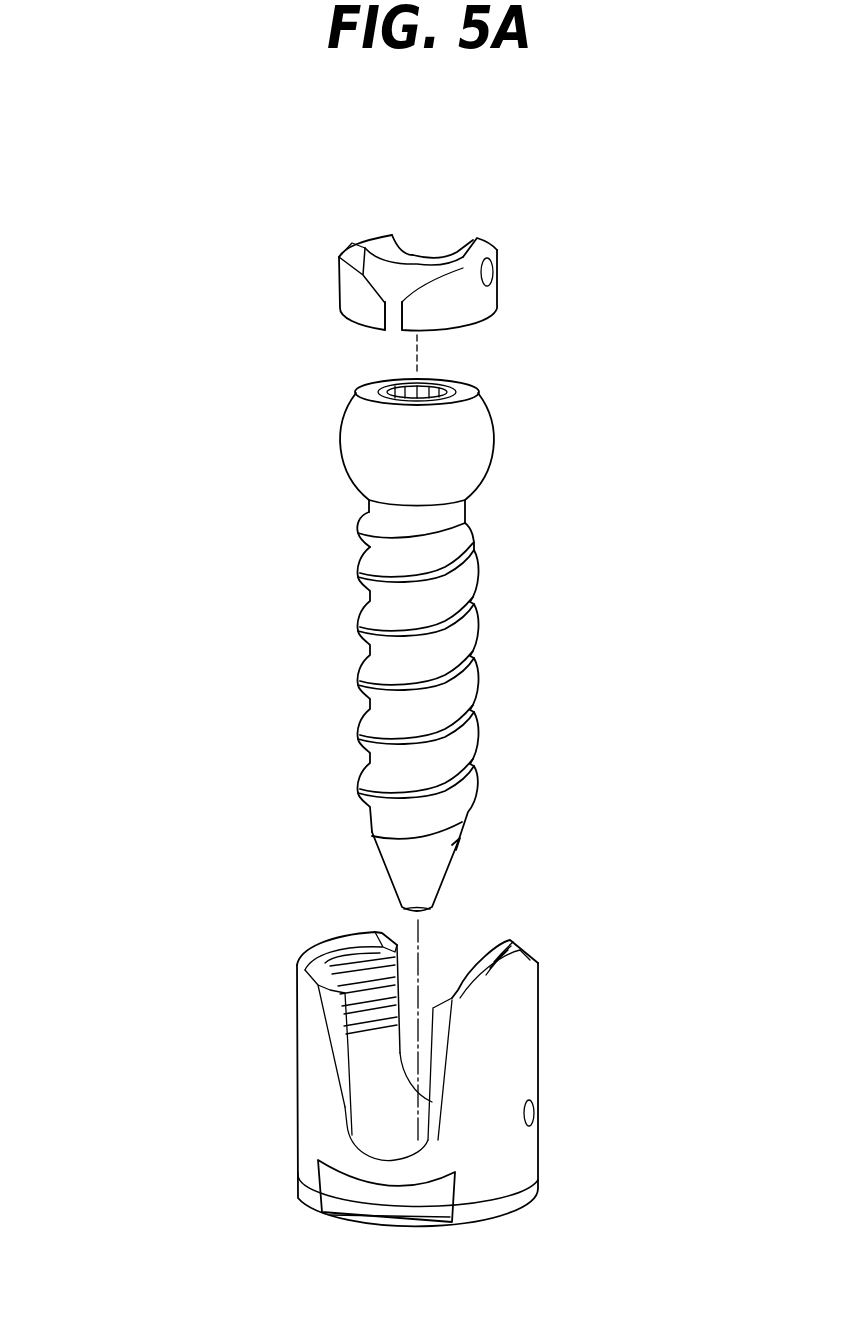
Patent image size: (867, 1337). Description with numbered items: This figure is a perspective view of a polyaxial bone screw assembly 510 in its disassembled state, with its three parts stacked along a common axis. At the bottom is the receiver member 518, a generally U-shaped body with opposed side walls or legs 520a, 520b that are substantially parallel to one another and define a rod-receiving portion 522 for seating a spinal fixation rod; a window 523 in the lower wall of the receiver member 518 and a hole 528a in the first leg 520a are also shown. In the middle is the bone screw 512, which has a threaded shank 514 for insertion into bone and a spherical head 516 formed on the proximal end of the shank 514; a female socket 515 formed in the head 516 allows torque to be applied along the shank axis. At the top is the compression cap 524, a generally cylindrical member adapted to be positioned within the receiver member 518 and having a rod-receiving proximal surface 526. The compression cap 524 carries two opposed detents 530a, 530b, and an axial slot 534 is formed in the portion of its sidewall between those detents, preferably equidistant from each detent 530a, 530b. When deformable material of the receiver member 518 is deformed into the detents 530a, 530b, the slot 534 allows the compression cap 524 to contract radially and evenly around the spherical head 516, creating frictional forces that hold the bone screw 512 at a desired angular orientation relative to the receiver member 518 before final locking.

The polyaxial bone screw assembly 510 is at (262, 142).
The bone screw 512 is at (250, 383).
The threaded shank 514 is at (350, 500).
The socket 515 is at (437, 392).
The spherical head 516 is at (448, 470).
The receiver member 518 is at (178, 1097).
The first leg 520a is at (525, 1085).
The second leg 520b is at (305, 1058).
The rod-receiving portion 522 is at (452, 935).
The window 523 is at (350, 1133).
The compression cap 524 is at (200, 265).
The rod-receiving proximal surface 526 is at (404, 246).
The hole 528a is at (535, 1115).
The first detent 530a is at (492, 267).
The second detent 530b is at (342, 252).
The axial slot 534 is at (402, 325).